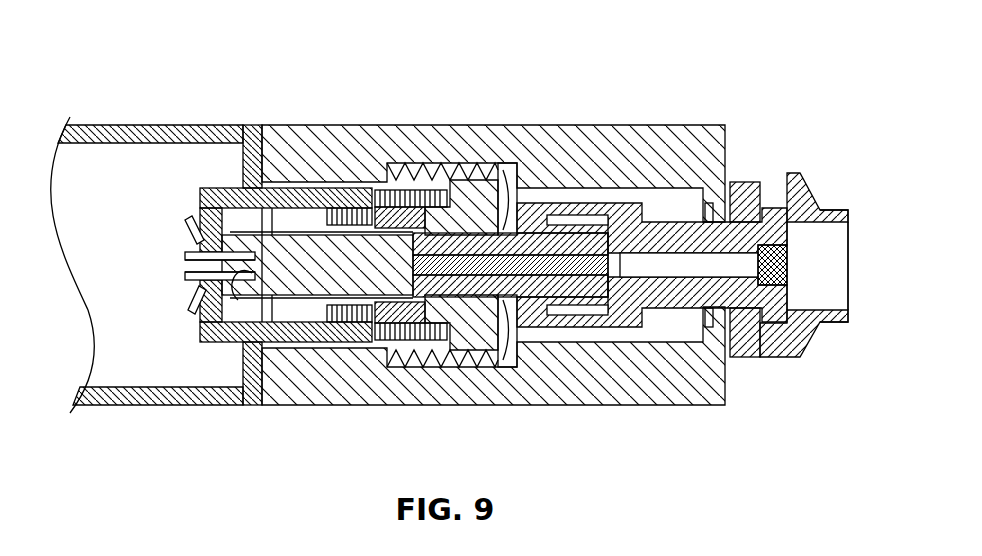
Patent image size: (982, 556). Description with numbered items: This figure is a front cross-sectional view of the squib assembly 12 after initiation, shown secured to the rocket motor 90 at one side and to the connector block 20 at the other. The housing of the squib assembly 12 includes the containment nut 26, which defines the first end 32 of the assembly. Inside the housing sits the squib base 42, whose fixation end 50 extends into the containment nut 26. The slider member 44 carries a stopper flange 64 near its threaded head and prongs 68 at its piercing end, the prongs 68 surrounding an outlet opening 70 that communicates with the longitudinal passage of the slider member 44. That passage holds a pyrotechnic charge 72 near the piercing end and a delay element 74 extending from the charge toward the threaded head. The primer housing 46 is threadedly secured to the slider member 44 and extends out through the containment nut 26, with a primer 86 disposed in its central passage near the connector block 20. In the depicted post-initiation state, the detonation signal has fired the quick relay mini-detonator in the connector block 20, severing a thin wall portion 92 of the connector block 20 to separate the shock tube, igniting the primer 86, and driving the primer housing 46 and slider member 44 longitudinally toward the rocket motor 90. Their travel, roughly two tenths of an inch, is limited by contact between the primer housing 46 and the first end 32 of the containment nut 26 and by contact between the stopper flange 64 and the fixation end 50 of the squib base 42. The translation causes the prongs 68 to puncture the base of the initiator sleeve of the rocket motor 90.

The squib assembly 12 is at (728, 38).
The connector block 20 is at (793, 173).
The containment nut 26 is at (628, 125).
The first end 32 is at (728, 365).
The squib base 42 is at (440, 337).
The slider member 44 is at (520, 312).
The primer housing 46 is at (683, 310).
The fixation end 50 is at (498, 335).
The stopper flange 64 is at (527, 220).
The prongs 68 is at (195, 252).
The outlet opening 70 is at (214, 343).
The pyrotechnic charge 72 is at (250, 125).
The delay element 74 is at (455, 243).
The primer 86 is at (787, 275).
The rocket motor 90 is at (118, 125).
The thin wall portion 92 is at (832, 210).